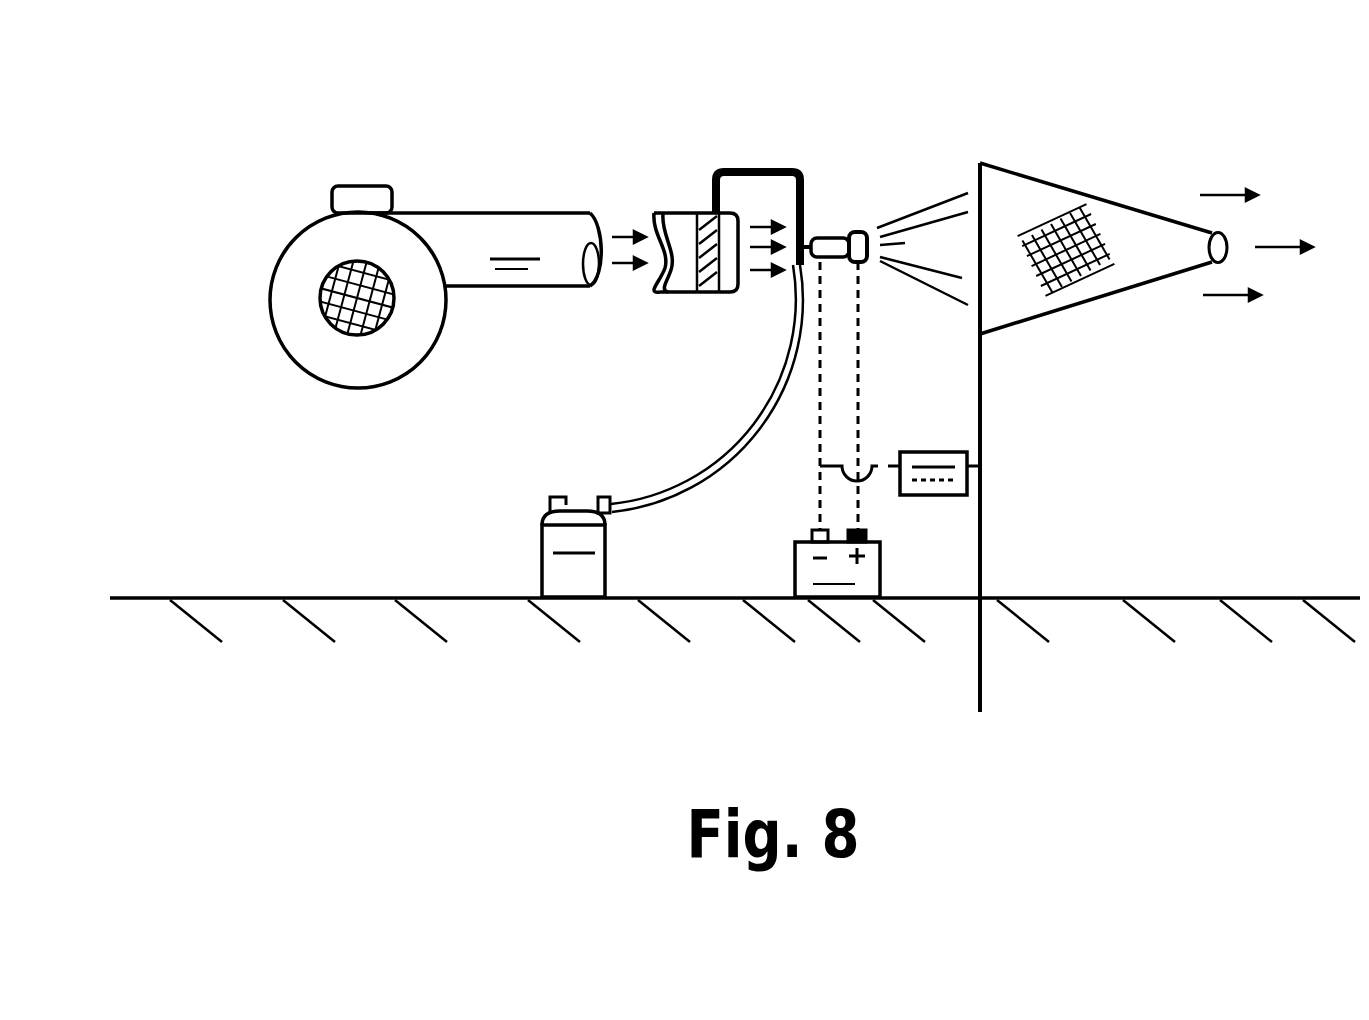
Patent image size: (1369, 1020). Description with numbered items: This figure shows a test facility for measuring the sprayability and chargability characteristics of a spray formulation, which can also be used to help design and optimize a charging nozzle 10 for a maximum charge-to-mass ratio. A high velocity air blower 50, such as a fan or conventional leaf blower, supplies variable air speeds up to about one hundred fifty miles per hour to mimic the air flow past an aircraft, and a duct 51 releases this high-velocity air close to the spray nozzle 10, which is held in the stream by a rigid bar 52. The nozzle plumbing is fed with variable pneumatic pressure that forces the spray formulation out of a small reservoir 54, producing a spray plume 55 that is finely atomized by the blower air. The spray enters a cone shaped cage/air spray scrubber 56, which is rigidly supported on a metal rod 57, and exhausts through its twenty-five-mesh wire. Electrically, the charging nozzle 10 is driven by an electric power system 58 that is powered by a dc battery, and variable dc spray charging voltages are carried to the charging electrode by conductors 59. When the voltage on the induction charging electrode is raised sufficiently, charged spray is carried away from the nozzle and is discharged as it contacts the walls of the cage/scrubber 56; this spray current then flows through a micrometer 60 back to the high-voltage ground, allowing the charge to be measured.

The nozzle 10 is at (830, 235).
The high velocity air blower 50 is at (412, 213).
The duct 51 is at (570, 213).
The rigid bar 52 is at (752, 170).
The small reservoir 54 is at (590, 600).
The spray plume 55 is at (920, 213).
The cone shaped cage/air spray scrubber 56 is at (1050, 182).
The metal rod 57 is at (985, 468).
The electric power system 58 is at (862, 600).
The conductors 59 is at (818, 352).
The micrometer 60 is at (932, 452).